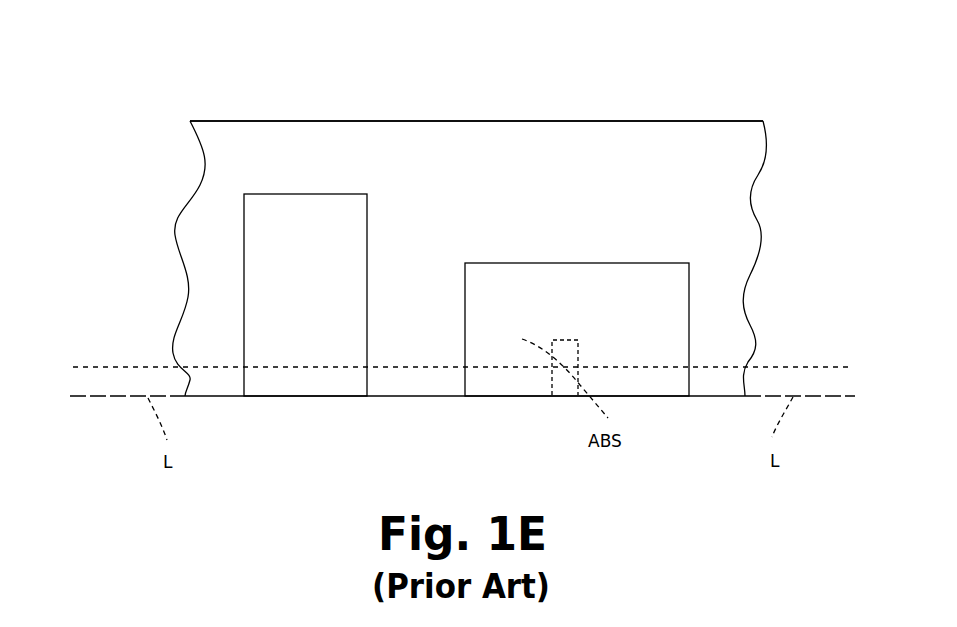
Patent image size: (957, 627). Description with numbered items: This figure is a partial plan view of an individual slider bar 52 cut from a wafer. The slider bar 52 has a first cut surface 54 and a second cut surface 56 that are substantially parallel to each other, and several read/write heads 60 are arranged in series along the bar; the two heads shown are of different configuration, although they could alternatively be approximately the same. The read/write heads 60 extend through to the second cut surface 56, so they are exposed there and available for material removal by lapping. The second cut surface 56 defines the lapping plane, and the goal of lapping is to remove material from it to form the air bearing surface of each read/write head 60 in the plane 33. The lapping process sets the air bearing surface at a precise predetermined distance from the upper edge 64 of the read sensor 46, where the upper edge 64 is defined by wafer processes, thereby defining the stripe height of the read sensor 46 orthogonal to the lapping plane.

The slider bar 52 is at (627, 78).
The first cut surface 54 is at (488, 120).
The read/write heads 60 is at (320, 208).
The second cut surface 56 is at (400, 397).
The plane 33 is at (120, 370).
The upper edge 64 is at (566, 338).
The read sensor 46 is at (553, 373).